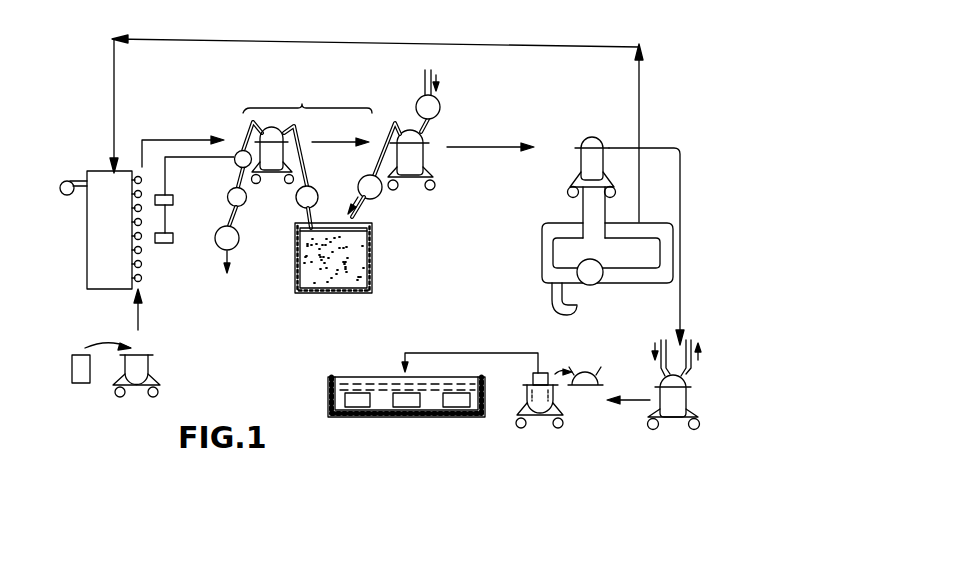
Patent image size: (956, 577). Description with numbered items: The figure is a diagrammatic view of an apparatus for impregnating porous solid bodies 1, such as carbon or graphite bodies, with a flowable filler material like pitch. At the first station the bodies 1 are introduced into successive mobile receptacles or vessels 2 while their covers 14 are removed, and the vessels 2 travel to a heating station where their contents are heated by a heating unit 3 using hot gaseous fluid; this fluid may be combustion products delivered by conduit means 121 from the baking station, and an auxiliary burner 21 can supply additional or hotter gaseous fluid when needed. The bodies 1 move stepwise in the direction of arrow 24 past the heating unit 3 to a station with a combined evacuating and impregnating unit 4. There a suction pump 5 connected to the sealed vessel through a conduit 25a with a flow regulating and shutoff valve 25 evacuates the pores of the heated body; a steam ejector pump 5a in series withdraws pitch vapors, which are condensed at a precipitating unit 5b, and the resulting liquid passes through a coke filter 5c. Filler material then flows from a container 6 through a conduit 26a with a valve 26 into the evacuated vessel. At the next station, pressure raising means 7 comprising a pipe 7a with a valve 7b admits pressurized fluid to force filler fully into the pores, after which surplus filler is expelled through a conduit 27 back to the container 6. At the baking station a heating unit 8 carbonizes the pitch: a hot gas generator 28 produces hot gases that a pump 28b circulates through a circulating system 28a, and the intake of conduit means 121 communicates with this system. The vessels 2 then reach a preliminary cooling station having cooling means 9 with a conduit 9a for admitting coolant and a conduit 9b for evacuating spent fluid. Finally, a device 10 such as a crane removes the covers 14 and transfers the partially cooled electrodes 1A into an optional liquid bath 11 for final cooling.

The conduit means 121 is at (371, 43).
The heating unit 3 is at (96, 241).
The auxiliary burner 21 is at (70, 180).
The precipitating unit 5b is at (174, 204).
The coke filter 5c is at (173, 245).
The steam ejector pump 5a is at (240, 150).
The flow regulating and shutoff valve 25 is at (228, 193).
The suction pump 5 is at (238, 246).
The conduit 25a is at (246, 124).
The combined evacuating and impregnating unit 4 is at (307, 143).
The conduit 26a is at (302, 132).
The valve 26 is at (316, 191).
The container 6 is at (362, 277).
The pipe 7a is at (428, 129).
The valve 7b is at (441, 104).
The pressure raising means 7 is at (408, 118).
The conduit 27 is at (380, 200).
The heating unit 8 is at (600, 126).
The circulating system 28a is at (651, 226).
The pump 28b is at (600, 266).
The hot gas generator 28 is at (578, 306).
The cooling means 9 is at (677, 428).
The conduit 9a is at (660, 376).
The conduit 9b is at (690, 376).
The device 10 is at (543, 428).
The electrodes 1A is at (548, 375).
The cover 14 is at (588, 372).
The liquid bath 11 is at (389, 418).
The bodies 1 is at (79, 380).
The mobile receptacles or vessels 2 is at (153, 368).
The arrow 24 is at (137, 315).